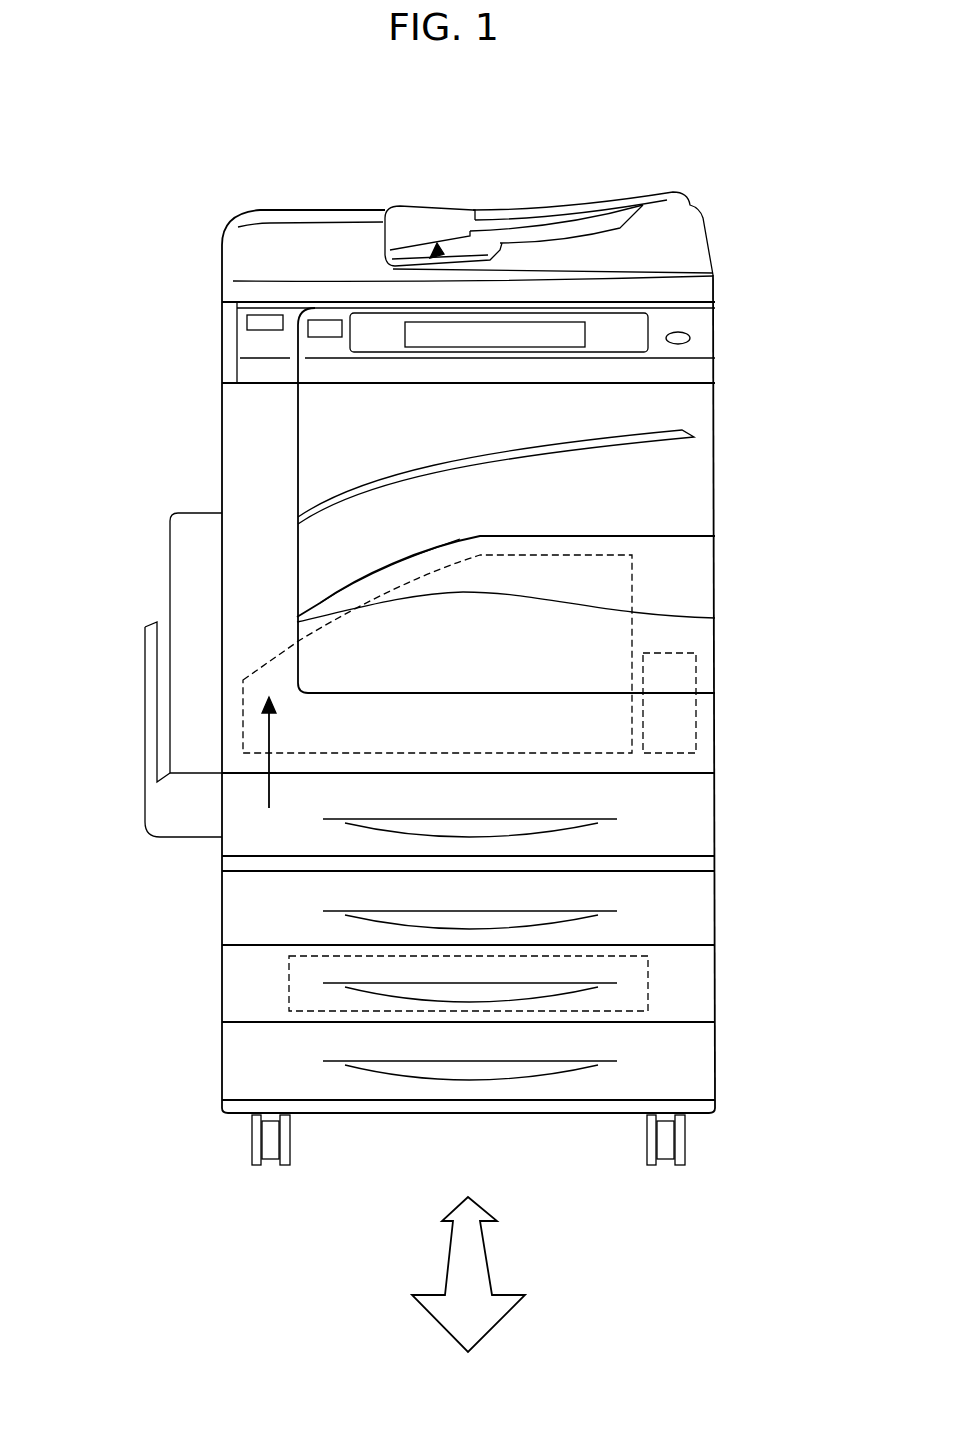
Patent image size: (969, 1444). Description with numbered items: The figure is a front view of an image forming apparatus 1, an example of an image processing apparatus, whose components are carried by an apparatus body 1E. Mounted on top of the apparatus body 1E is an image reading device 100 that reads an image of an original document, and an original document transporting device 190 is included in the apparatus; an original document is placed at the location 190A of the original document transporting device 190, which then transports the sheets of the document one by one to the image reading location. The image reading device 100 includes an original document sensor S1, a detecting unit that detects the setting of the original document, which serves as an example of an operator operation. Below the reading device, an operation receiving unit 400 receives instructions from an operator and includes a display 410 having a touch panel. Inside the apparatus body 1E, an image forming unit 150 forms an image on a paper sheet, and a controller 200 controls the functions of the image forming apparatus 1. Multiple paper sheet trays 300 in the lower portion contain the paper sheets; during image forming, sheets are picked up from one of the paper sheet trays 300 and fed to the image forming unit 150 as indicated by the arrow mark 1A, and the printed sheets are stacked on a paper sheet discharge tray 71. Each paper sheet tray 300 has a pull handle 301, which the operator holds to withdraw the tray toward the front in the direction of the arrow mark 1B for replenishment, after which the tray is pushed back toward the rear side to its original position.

The image forming apparatus 1 is at (206, 164).
The image reading device 100 is at (200, 280).
The original document transporting device 190 is at (304, 202).
The location of the original document transporting device 190A is at (610, 200).
The original document sensor S1 is at (437, 247).
The operation receiving unit 400 is at (660, 321).
The display 410 is at (493, 333).
The apparatus body 1E is at (717, 444).
The paper sheet discharge tray 71 is at (399, 546).
The image forming unit 150 is at (632, 592).
The controller 200 is at (696, 715).
The arrow mark 1A is at (269, 792).
The paper sheet tray 300 is at (715, 817).
The pull handle 301 is at (289, 978).
The arrow mark 1B is at (488, 1257).